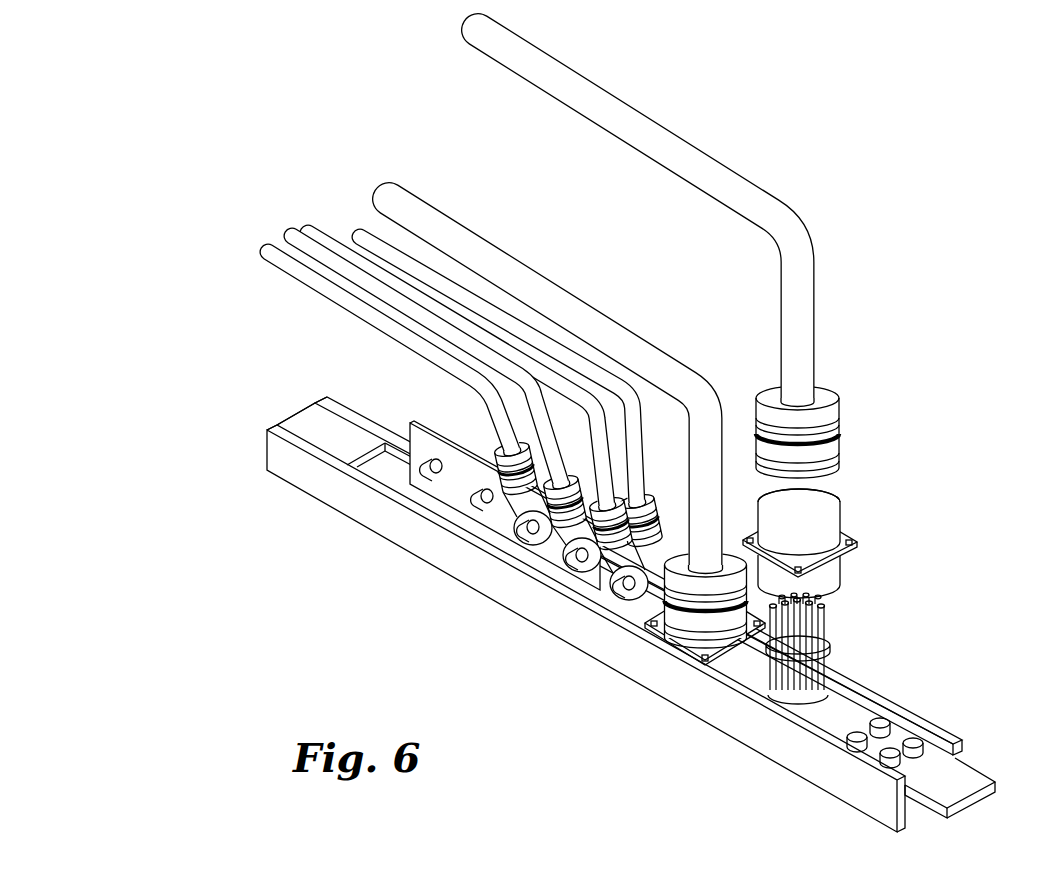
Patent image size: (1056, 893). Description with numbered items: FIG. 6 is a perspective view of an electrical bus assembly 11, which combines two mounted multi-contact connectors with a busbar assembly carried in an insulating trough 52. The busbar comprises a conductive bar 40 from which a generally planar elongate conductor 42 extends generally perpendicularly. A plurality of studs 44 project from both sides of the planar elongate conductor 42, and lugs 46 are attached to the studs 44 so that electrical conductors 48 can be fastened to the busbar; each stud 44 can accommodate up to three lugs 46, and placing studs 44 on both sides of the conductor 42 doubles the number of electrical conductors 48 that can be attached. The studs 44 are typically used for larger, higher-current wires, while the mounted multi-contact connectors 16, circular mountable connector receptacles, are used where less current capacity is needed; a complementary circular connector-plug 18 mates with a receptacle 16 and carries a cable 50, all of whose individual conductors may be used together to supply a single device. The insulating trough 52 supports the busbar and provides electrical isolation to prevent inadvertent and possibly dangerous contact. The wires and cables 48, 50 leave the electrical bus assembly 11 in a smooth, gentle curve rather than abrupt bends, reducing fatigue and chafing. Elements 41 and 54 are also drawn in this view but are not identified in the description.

The electrical bus assembly 11 is at (277, 359).
The circular mountable connector receptacle 16 is at (848, 540).
The circular connector-plug 18 is at (840, 440).
The conductive bar 40 is at (303, 425).
The tongue 41 is at (978, 776).
The planar elongate conductor 42 is at (410, 465).
The studs 44 is at (480, 503).
The lugs 46 is at (503, 482).
The electrical conductors 48 is at (237, 238).
The cable 50 is at (540, 55).
The insulating trough 52 is at (858, 795).
The standoff 54 is at (912, 742).